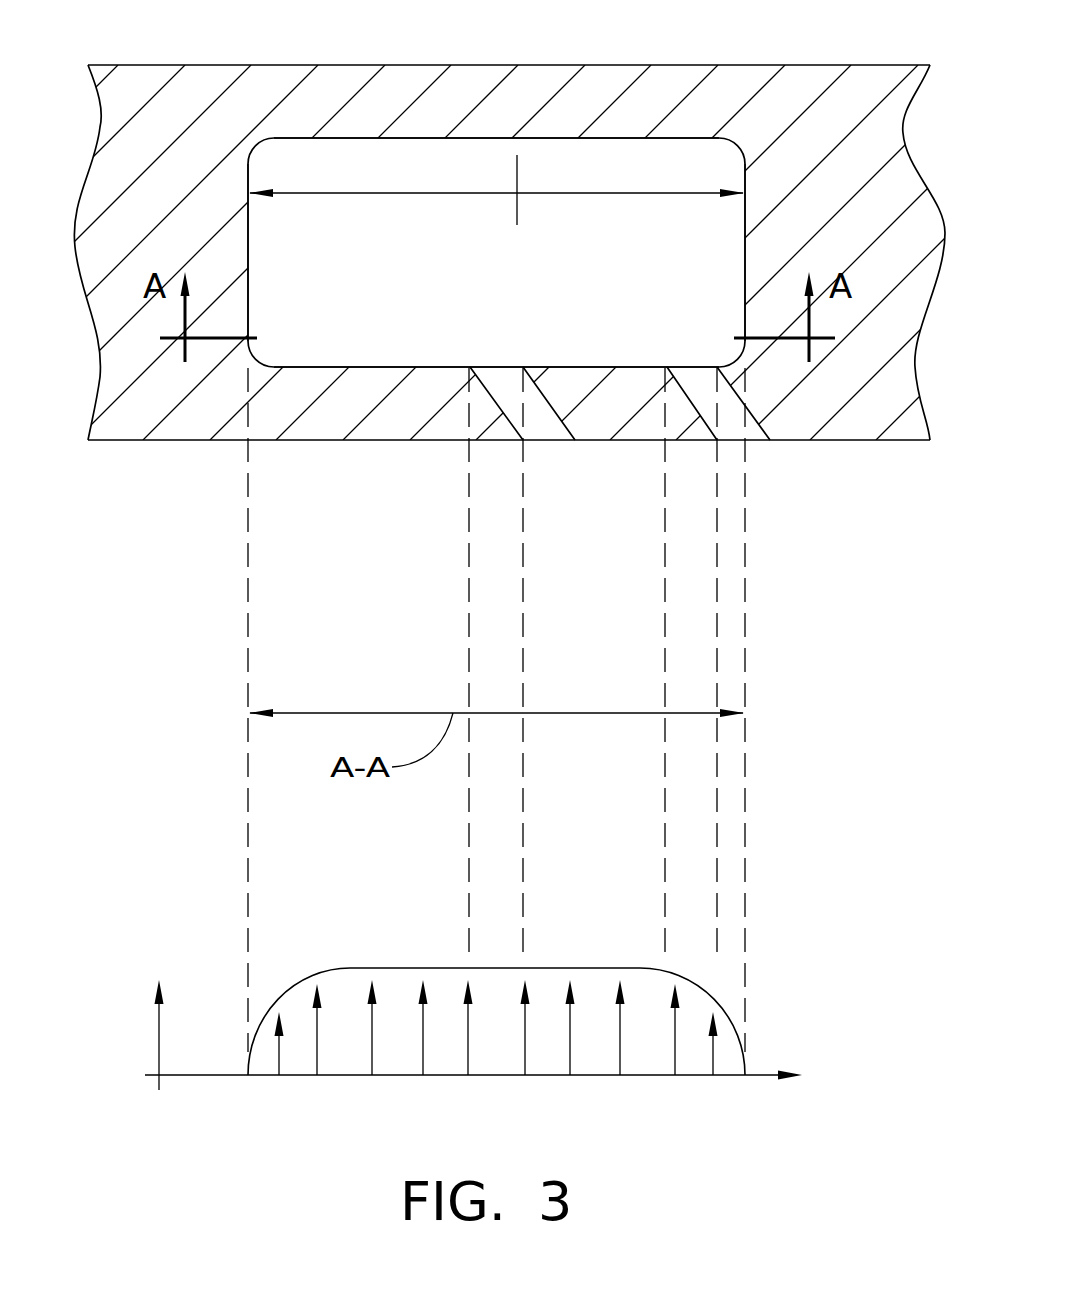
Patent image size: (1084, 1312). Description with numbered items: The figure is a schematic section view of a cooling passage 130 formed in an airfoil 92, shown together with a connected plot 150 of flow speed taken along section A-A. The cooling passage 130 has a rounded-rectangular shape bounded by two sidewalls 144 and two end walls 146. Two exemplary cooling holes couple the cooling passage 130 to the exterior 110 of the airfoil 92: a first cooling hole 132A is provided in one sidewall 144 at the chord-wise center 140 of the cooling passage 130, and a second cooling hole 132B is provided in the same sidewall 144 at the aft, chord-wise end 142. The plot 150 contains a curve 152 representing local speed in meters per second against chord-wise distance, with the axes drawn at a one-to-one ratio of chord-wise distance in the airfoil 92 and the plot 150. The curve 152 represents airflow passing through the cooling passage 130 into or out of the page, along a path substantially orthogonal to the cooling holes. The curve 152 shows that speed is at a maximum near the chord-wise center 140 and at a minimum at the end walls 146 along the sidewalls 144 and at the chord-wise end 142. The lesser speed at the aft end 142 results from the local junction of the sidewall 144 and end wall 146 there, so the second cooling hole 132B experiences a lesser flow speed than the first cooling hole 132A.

The airfoil 92 is at (157, 63).
The exterior 110 is at (856, 648).
The cooling passage 130 is at (365, 143).
The first cooling hole 132A is at (552, 403).
The second cooling hole 132B is at (708, 395).
The chord-wise center 140 is at (517, 195).
The aft chord-wise end 142 is at (748, 220).
The sidewall 144 is at (323, 142).
The end wall 146 is at (249, 278).
The plot 150 is at (193, 900).
The curve 152 is at (412, 967).